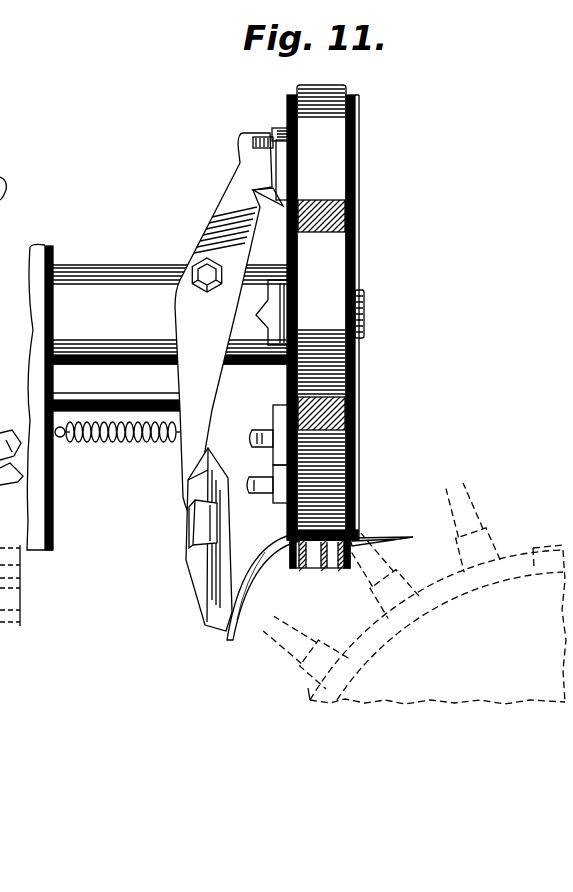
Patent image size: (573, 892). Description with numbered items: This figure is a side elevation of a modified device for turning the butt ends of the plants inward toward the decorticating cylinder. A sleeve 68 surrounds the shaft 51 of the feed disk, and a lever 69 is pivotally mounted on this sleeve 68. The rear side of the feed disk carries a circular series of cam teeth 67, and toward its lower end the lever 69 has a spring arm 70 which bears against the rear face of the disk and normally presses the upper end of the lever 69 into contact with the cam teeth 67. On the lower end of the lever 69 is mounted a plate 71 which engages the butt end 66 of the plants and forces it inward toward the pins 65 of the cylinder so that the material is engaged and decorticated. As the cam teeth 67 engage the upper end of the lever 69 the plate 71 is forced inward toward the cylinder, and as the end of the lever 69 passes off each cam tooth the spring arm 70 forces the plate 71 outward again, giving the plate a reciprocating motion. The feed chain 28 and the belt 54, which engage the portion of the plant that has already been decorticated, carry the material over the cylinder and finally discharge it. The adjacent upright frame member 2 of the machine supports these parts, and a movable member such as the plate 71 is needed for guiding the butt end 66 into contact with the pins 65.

The upright frame member 2 is at (32, 292).
The feed chain 28 is at (297, 560).
The shaft 51 is at (364, 313).
The belt 54 is at (327, 198).
The pins 65 is at (543, 547).
The butt end 66 is at (227, 640).
The cam teeth 67 is at (244, 140).
The sleeve 68 is at (127, 281).
The lever 69 is at (198, 317).
The spring arm 70 is at (182, 452).
The plate 71 is at (207, 582).